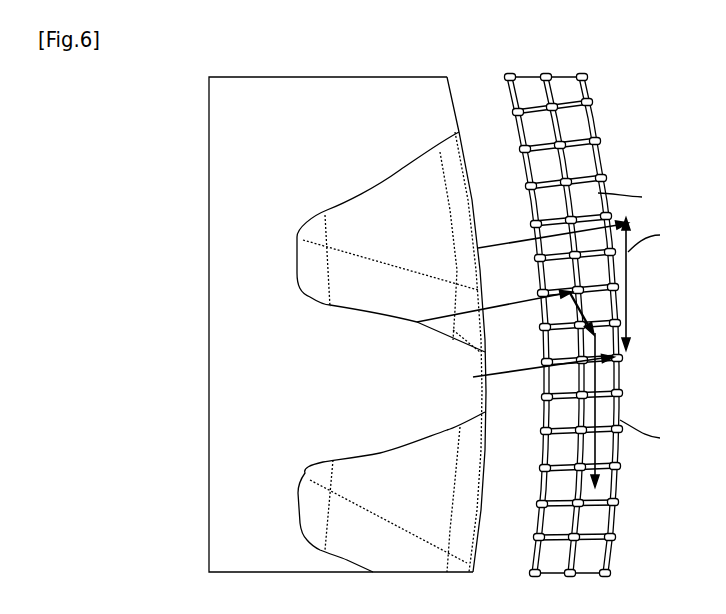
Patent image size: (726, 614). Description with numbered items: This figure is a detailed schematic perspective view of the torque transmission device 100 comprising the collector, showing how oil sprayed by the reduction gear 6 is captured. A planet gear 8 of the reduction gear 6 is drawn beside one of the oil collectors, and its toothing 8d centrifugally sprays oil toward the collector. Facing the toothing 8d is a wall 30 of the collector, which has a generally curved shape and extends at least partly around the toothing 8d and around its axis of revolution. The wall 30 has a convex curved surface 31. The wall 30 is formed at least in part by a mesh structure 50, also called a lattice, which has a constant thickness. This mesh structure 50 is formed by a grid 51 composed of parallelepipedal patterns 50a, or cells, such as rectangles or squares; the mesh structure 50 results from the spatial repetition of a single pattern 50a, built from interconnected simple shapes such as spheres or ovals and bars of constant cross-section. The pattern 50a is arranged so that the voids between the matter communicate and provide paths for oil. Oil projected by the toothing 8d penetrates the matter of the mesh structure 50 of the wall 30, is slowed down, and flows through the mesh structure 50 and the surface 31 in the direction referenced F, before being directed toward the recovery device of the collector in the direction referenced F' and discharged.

The motor 100 is at (141, 150).
The reduction gear 6 is at (178, 125).
The planet gear 8 is at (230, 250).
The toothing 8d is at (407, 355).
The mesh structure 50 is at (552, 160).
The pattern 50a is at (617, 395).
The grid 51 is at (560, 128).
The wall 30 is at (585, 300).
The convex curved surface 31 is at (620, 467).